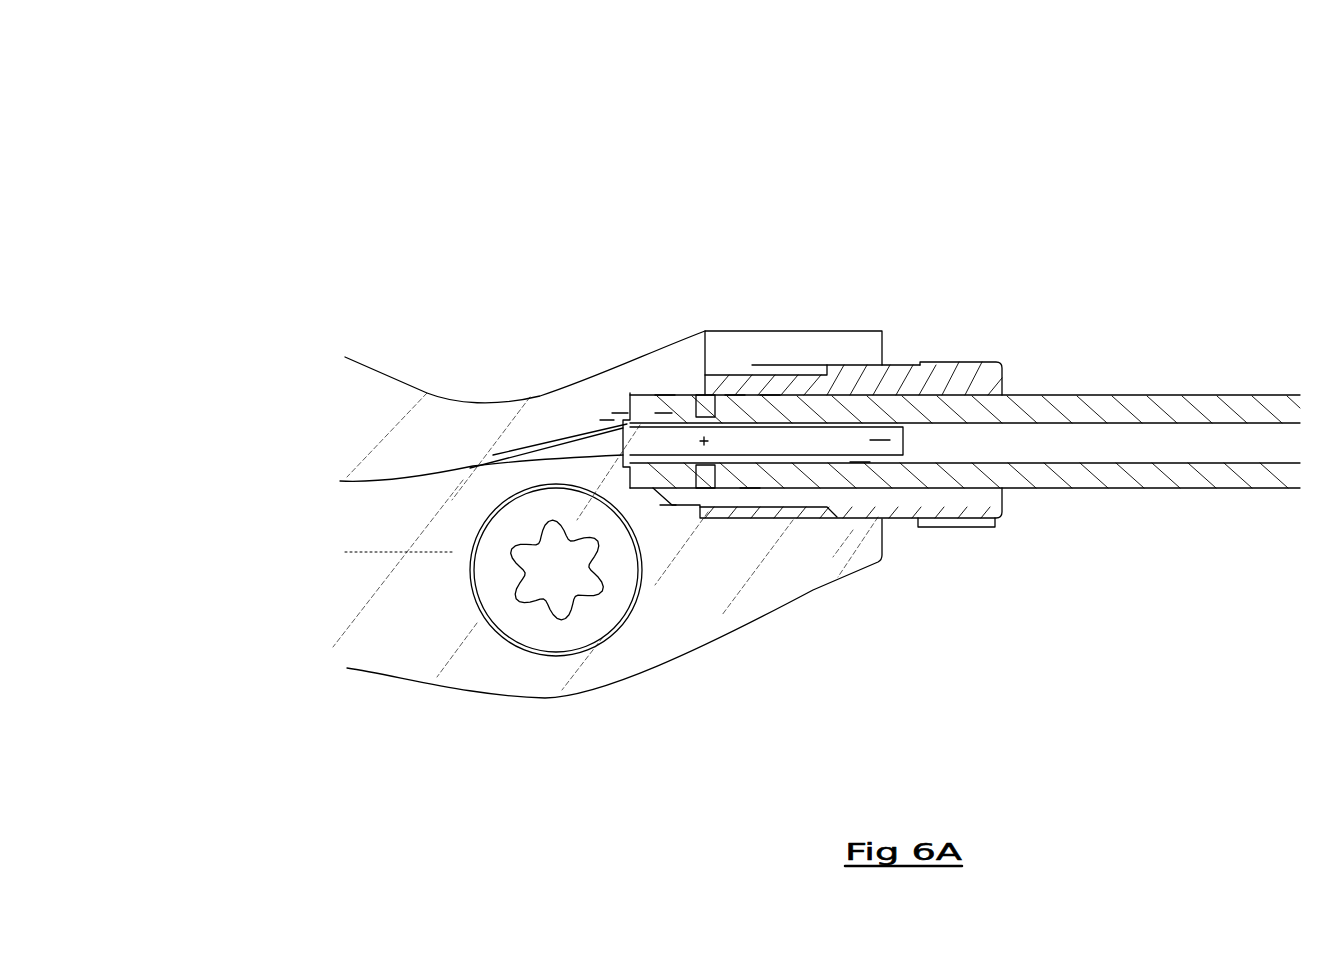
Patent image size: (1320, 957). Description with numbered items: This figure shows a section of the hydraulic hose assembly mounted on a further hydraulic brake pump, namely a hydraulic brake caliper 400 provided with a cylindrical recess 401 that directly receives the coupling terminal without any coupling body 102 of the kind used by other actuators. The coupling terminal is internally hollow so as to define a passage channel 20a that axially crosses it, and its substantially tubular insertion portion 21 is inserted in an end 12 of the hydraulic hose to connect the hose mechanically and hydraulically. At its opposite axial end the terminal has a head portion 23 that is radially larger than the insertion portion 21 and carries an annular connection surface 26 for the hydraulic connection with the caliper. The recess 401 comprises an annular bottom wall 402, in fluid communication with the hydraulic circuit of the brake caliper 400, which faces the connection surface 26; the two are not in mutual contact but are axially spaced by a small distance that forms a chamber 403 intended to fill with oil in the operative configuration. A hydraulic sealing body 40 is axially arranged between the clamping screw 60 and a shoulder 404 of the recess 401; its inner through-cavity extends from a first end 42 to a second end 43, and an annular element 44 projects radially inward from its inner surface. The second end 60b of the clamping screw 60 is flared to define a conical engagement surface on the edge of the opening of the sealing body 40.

The hydraulic brake caliper 400 is at (392, 418).
The chamber 403 is at (355, 482).
The annular bottom wall 402 is at (624, 472).
The shoulder 404 is at (672, 507).
The coupling body 102 is at (603, 420).
The connection surface 26 is at (627, 413).
The head portion 23 is at (662, 413).
The first end 42 is at (680, 400).
The annular element 44 is at (703, 393).
The end of the hydraulic hose 12 is at (735, 397).
The second end 43 is at (748, 393).
The cylindrical recess 401 is at (790, 373).
The clamping screw 60 is at (950, 378).
The second end of the clamping screw 60b is at (755, 497).
The hydraulic sealing body 40 is at (705, 508).
The insertion portion 21 is at (862, 462).
The passage channel 20a is at (880, 440).